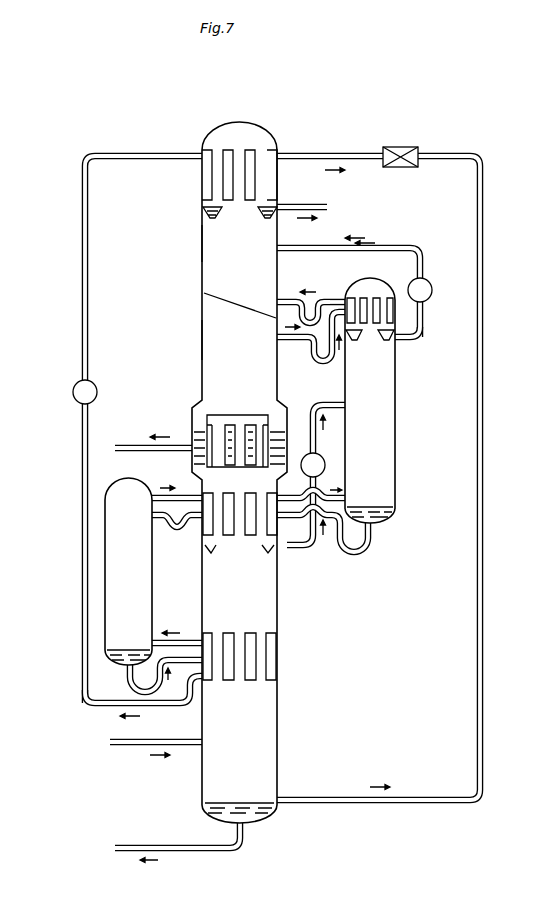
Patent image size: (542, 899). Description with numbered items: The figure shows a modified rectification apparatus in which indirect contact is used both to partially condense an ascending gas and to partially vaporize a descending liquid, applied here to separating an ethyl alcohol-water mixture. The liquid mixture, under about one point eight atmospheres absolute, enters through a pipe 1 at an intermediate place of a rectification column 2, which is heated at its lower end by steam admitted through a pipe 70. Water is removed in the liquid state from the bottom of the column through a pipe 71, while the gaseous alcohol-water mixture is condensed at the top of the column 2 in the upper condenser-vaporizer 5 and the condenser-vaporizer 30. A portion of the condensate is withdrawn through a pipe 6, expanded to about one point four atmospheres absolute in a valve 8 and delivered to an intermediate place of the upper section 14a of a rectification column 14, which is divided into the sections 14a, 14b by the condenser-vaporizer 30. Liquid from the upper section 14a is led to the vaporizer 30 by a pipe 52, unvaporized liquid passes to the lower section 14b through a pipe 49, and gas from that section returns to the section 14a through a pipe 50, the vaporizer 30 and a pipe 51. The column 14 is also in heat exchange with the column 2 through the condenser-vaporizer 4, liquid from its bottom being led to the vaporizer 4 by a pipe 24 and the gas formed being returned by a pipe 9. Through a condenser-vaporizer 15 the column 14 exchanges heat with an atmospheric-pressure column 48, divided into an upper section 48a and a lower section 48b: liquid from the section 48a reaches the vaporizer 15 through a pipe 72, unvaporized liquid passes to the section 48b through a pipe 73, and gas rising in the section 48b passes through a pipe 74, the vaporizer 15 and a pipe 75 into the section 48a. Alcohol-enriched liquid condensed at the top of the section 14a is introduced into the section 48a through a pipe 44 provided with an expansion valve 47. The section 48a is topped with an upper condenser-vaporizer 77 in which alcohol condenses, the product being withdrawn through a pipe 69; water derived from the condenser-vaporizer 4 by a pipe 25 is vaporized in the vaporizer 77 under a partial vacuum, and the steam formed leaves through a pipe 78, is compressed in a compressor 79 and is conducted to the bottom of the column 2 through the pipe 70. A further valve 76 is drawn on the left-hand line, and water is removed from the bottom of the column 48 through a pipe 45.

The pipe 1 is at (120, 747).
The rectification column 2 is at (278, 742).
The condenser-vaporizer 4 is at (265, 658).
The upper condenser-vaporizer 5 is at (206, 436).
The pipe 6 is at (314, 546).
The valve 8 is at (322, 456).
The pipe 9 is at (190, 641).
The rectification column 14 is at (397, 458).
The upper section 14a is at (397, 386).
The lower section 14b is at (104, 530).
The condenser-vaporizer 15 is at (398, 313).
The pipe 24 is at (150, 692).
The pipe 25 is at (84, 690).
The condenser-vaporizer 30 is at (272, 553).
The pipe 44 is at (420, 268).
The pipe 45 is at (140, 446).
The expansion valve 47 is at (433, 288).
The column 48 is at (203, 311).
The upper section 48a is at (202, 243).
The lower section 48b is at (202, 335).
The pipe 49 is at (175, 522).
The pipe 50 is at (190, 496).
The pipe 51 is at (287, 496).
The pipe 52 is at (372, 540).
The pipe 69 is at (300, 207).
The pipe 70 is at (325, 802).
The pipe 71 is at (212, 850).
The pipe 72 is at (292, 300).
The pipe 73 is at (318, 358).
The pipe 74 is at (292, 340).
The pipe 75 is at (334, 300).
The valve 76 is at (74, 384).
The upper condenser-vaporizer 77 is at (206, 175).
The pipe 78 is at (330, 154).
The compressor 79 is at (402, 146).